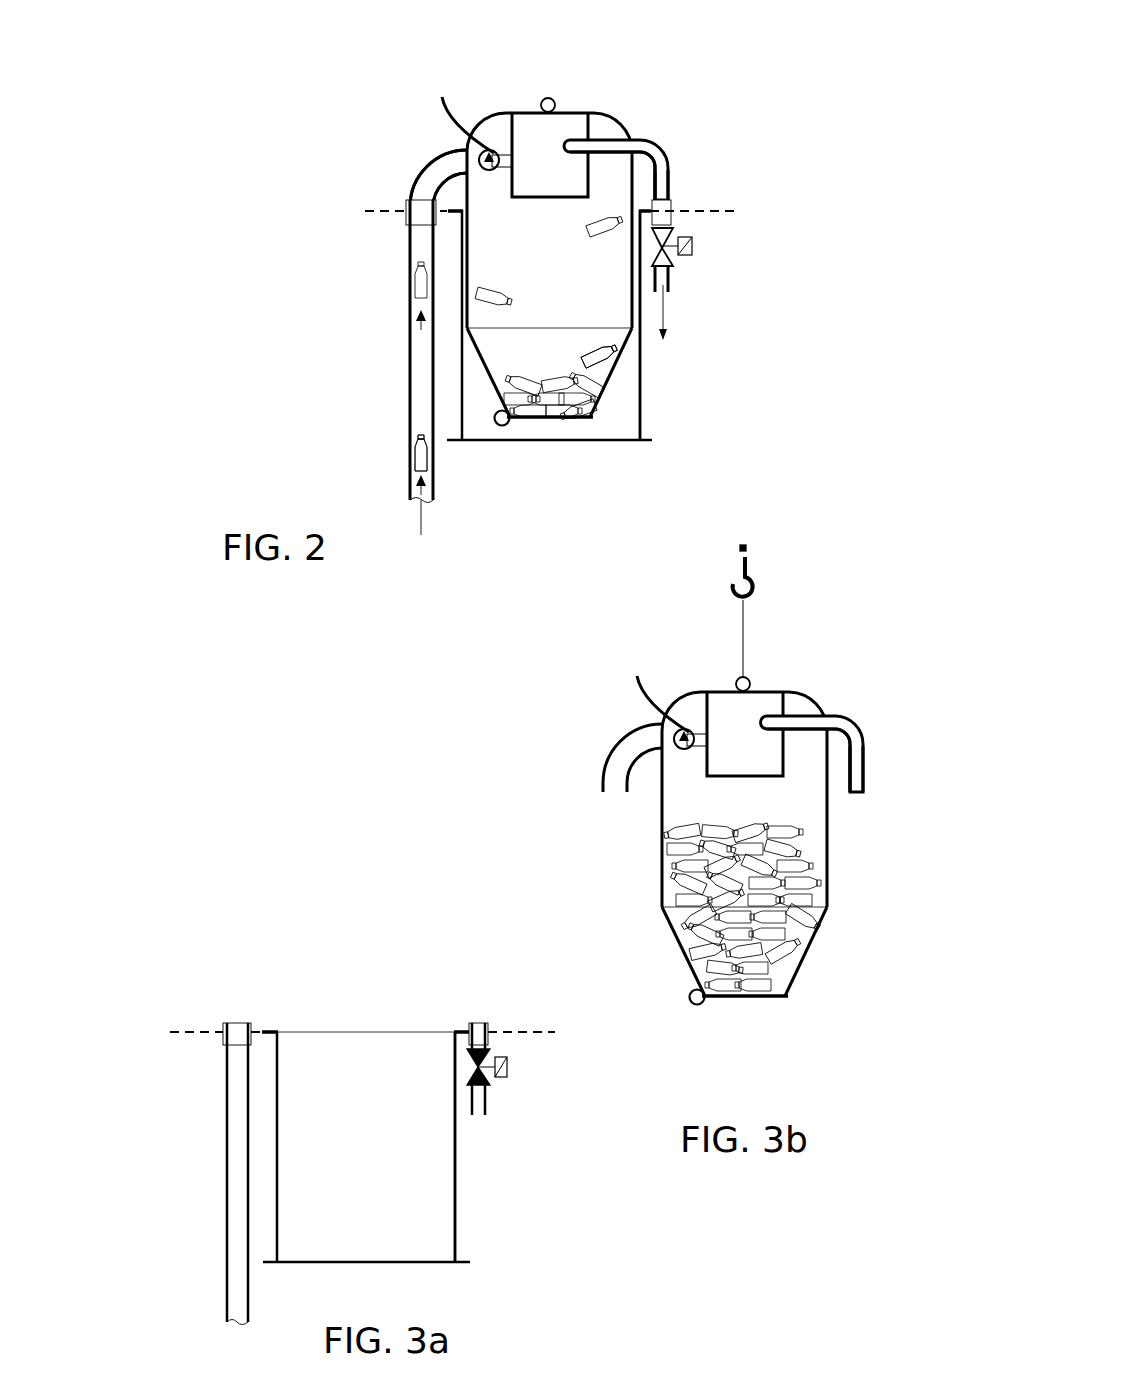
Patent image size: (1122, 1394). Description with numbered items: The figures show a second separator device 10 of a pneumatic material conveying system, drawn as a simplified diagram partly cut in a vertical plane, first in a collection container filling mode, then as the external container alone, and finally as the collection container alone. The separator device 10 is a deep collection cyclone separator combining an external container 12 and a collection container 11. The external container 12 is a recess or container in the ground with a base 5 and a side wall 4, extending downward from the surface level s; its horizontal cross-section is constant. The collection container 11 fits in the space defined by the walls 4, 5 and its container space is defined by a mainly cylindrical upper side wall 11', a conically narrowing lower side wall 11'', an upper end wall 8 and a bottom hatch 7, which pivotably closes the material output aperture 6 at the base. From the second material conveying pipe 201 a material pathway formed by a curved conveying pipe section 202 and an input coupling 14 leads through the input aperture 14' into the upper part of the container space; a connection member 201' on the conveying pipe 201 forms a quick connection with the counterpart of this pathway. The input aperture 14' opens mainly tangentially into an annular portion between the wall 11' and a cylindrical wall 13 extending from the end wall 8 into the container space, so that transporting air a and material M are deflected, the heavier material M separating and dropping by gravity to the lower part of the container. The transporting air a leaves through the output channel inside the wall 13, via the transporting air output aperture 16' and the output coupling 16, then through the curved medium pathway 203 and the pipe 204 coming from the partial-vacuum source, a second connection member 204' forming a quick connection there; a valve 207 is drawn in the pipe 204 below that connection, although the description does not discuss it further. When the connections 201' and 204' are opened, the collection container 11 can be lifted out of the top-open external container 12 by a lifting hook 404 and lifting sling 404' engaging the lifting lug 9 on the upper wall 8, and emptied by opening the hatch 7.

In FIG. 2, the second separator device 10 is at (362, 82).
In FIG. 2, the side wall 4 is at (641, 295).
In FIG. 3a, the side wall 4 is at (456, 1115).
In FIG. 2, the base 5 is at (512, 441).
In FIG. 3a, the base 5 is at (318, 1263).
In FIG. 2, the material output aperture 6 is at (581, 421).
In FIG. 3b, the material output aperture 6 is at (772, 997).
In FIG. 2, the bottom hatch 7 is at (565, 421).
In FIG. 3b, the bottom hatch 7 is at (765, 995).
In FIG. 2, the upper end wall 8 is at (499, 112).
In FIG. 3b, the upper end wall 8 is at (690, 692).
In FIG. 2, the lifting lug 9 is at (546, 100).
In FIG. 3b, the lifting lug 9 is at (740, 680).
In FIG. 2, the collection container 11 is at (486, 342).
In FIG. 3b, the collection container 11 is at (703, 849).
In FIG. 2, the upper part of side wall 11' is at (431, 172).
In FIG. 3b, the upper part of side wall 11' is at (626, 752).
In FIG. 2, the lower part of side wall 11'' is at (513, 382).
In FIG. 3b, the lower part of side wall 11'' is at (709, 955).
In FIG. 2, the external container 12 is at (641, 345).
In FIG. 3a, the external container 12 is at (456, 1200).
In FIG. 2, the wall 13 is at (586, 162).
In FIG. 3b, the wall 13 is at (847, 722).
In FIG. 2, the input coupling 14 is at (400, 128).
In FIG. 3b, the input coupling 14 is at (591, 700).
In FIG. 2, the input aperture 14' is at (474, 117).
In FIG. 3b, the input aperture 14' is at (672, 698).
In FIG. 2, the transporting air output coupling 16 is at (616, 127).
In FIG. 3b, the transporting air output coupling 16 is at (812, 713).
In FIG. 2, the transporting air output aperture 16' is at (563, 130).
In FIG. 3b, the transporting air output aperture 16' is at (759, 711).
In FIG. 2, the second material conveying pipe 201 is at (355, 326).
In FIG. 3a, the second material conveying pipe 201 is at (150, 1178).
In FIG. 2, the connection member 201' is at (345, 222).
In FIG. 3a, the connection member 201' is at (149, 1005).
In FIG. 2, the conveying pipe section 202 is at (466, 185).
In FIG. 3b, the conveying pipe section 202 is at (628, 778).
In FIG. 2, the medium pathway 203 is at (652, 142).
In FIG. 3b, the medium pathway 203 is at (862, 775).
In FIG. 2, the pipe 204 is at (716, 291).
In FIG. 3a, the pipe 204 is at (530, 1091).
In FIG. 2, the second connection member 204' is at (733, 205).
In FIG. 3a, the second connection member 204' is at (528, 1010).
In FIG. 2, the valve 207 is at (680, 262).
In FIG. 3a, the valve 207 is at (497, 1084).
In FIG. 3b, the lifting hook 404 is at (711, 586).
In FIG. 3b, the lifting sling 404' is at (710, 568).
In FIG. 2, the material M is at (418, 455).
In FIG. 3b, the material M is at (808, 935).
In FIG. 2, the surface level s is at (365, 210).
In FIG. 3a, the surface level s is at (170, 1031).
In FIG. 2, the transporting air a is at (671, 312).